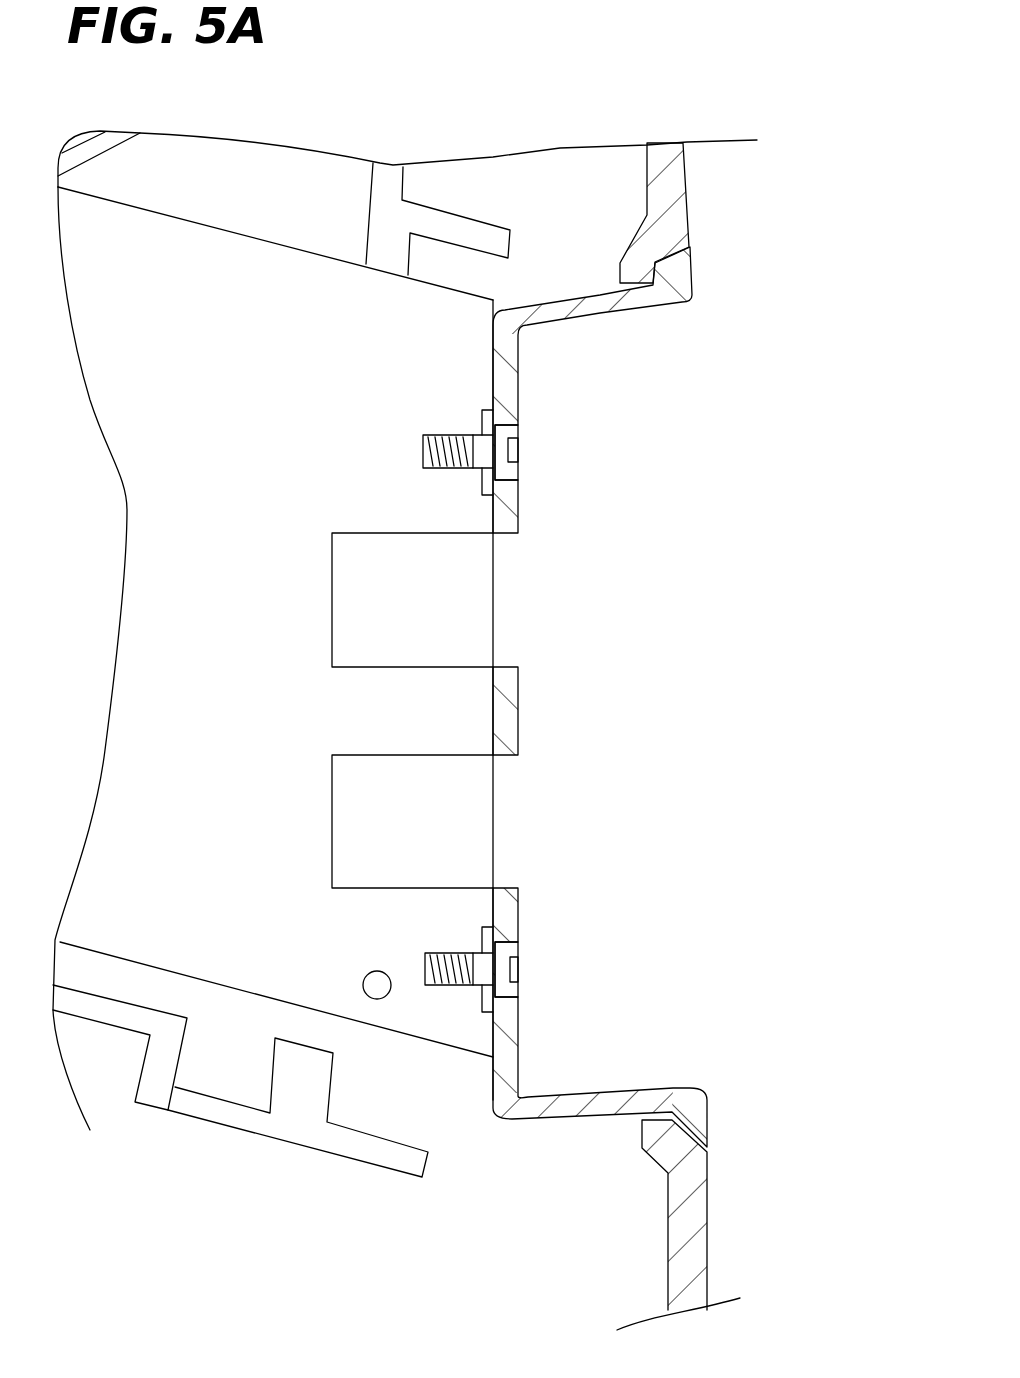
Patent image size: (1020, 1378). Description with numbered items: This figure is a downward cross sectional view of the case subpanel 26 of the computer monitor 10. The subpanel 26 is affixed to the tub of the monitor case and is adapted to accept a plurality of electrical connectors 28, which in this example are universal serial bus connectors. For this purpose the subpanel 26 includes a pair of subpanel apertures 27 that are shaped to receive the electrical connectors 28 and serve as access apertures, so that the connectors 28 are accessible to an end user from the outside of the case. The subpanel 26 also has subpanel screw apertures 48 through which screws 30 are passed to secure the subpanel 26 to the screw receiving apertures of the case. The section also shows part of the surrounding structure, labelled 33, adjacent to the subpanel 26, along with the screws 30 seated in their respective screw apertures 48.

The computer monitor 10 is at (748, 1065).
The case subpanel 26 is at (683, 302).
The subpanel apertures 27 is at (503, 598).
The electrical connectors 28 is at (424, 617).
The screws 30 is at (503, 452).
The trim body 33 is at (215, 366).
The subpanel screw apertures 48 is at (480, 473).